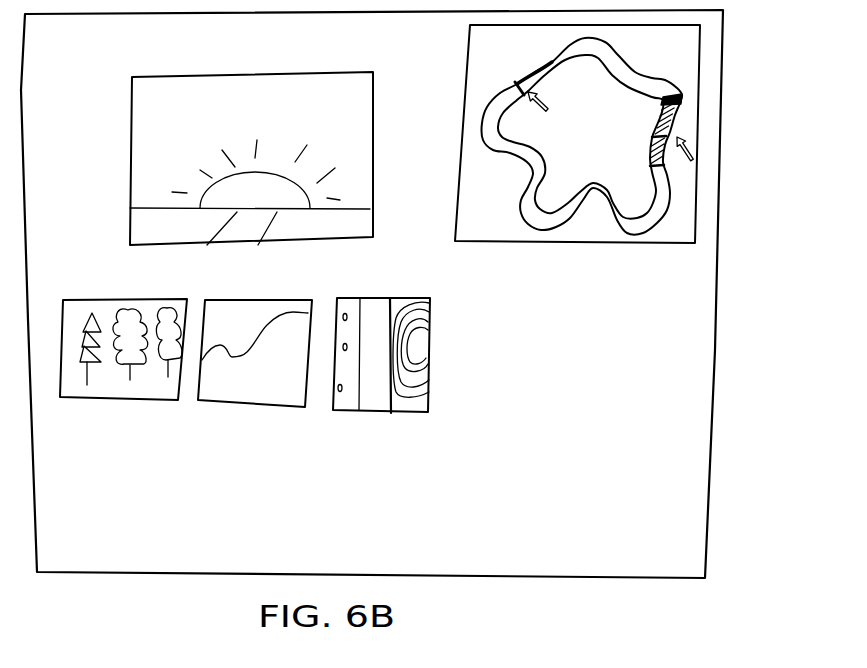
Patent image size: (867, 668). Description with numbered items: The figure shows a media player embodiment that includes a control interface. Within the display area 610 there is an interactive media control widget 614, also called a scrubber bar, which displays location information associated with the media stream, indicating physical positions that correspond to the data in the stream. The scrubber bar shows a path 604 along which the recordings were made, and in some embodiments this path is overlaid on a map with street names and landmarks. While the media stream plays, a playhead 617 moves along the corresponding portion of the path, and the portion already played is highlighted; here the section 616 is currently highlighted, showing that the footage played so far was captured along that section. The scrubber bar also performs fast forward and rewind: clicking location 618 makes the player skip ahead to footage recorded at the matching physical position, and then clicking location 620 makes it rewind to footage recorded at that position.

The display area 610 is at (715, 330).
The interactive media control widget 614 is at (483, 245).
The path 604 is at (588, 160).
The section 616 is at (647, 125).
The playhead 617 is at (660, 100).
The location 618 is at (517, 83).
The location 620 is at (682, 97).